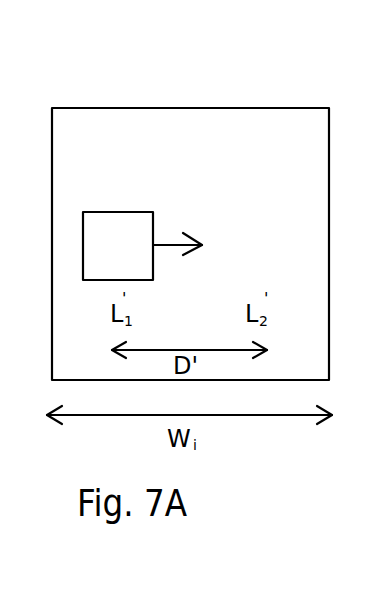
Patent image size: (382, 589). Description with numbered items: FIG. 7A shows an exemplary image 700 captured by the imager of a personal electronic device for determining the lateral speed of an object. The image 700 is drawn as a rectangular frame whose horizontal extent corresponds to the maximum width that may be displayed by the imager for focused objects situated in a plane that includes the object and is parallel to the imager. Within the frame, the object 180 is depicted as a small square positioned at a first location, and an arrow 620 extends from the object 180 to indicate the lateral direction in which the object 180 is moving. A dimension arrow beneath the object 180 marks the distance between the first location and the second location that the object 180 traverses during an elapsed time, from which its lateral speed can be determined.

The image 700 is at (215, 67).
The object 180 is at (112, 212).
The arrow 620 is at (173, 240).